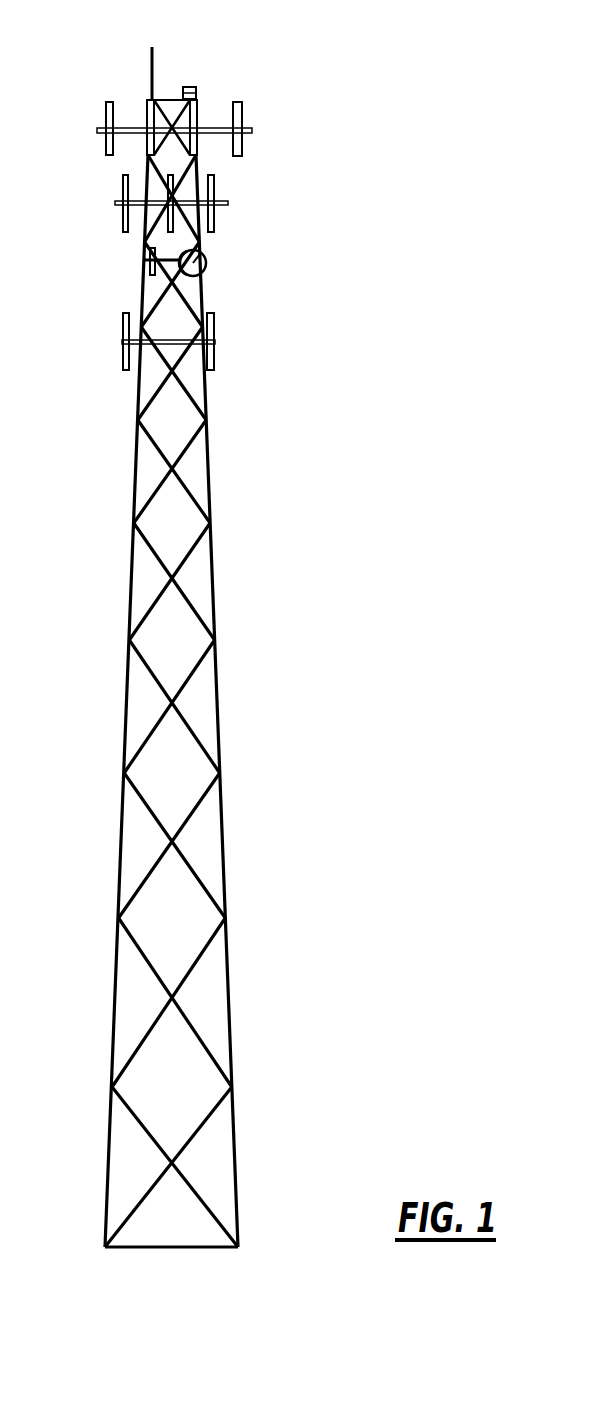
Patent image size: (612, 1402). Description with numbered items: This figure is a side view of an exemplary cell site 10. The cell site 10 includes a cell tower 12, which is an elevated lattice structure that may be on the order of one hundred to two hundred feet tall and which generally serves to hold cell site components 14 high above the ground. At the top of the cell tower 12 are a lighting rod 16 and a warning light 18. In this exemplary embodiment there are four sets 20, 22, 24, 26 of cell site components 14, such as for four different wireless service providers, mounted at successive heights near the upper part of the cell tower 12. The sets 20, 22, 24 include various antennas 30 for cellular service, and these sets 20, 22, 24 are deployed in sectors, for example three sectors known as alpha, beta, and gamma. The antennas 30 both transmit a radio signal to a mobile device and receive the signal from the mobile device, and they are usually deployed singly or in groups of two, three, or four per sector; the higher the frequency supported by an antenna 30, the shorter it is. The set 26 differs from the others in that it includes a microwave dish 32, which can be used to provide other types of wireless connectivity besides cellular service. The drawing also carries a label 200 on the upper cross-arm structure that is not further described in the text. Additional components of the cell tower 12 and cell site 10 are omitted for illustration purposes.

The cell site 10 is at (400, 228).
The cell tower 12 is at (232, 943).
The cell site components 14 is at (298, 150).
The lighting rod 16 is at (155, 77).
The warning light 18 is at (193, 85).
The set of cell site components 20 is at (97, 125).
The set of cell site components 22 is at (115, 202).
The set of cell site components 24 is at (123, 330).
The set of cell site components 26 is at (140, 262).
The antenna 30 is at (243, 113).
The microwave dish 32 is at (205, 255).
The antenna mount cross-arm 200 is at (121, 124).